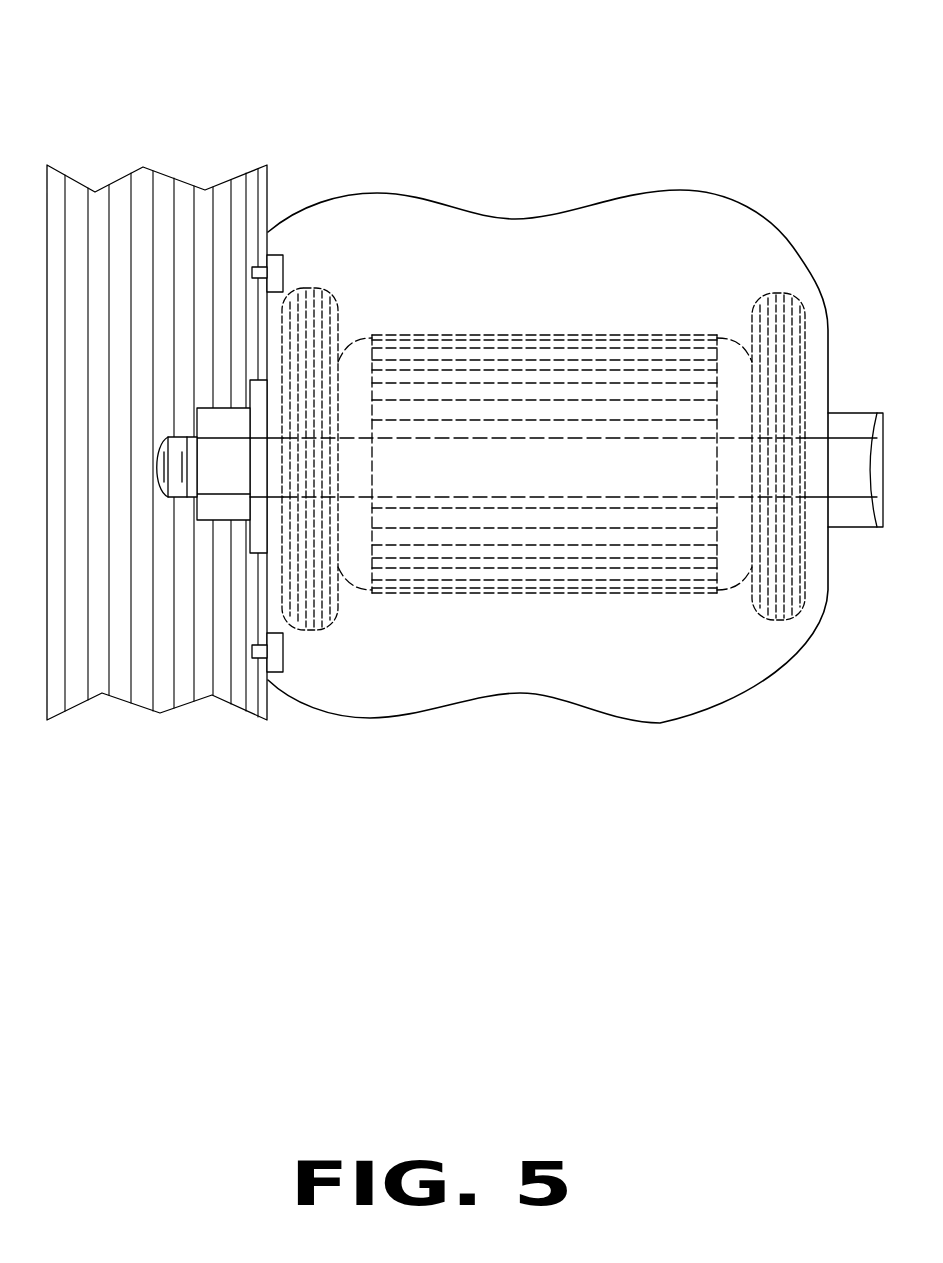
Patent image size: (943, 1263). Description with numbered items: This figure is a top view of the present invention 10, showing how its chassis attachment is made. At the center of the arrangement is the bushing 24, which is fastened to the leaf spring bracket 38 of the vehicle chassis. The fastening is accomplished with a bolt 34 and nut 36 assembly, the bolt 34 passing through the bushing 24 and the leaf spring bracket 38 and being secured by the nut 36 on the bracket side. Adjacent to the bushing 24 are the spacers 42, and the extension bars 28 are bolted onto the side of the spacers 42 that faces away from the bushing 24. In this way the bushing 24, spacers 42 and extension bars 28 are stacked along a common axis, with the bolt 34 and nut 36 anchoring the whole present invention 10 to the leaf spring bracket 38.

The present invention 10 is at (798, 118).
The bushing 24 is at (580, 338).
The extension bars 28 is at (318, 630).
The bolt 34 is at (866, 527).
The nut 36 is at (220, 412).
The leaf spring bracket 38 is at (240, 710).
The spacers 42 is at (357, 590).